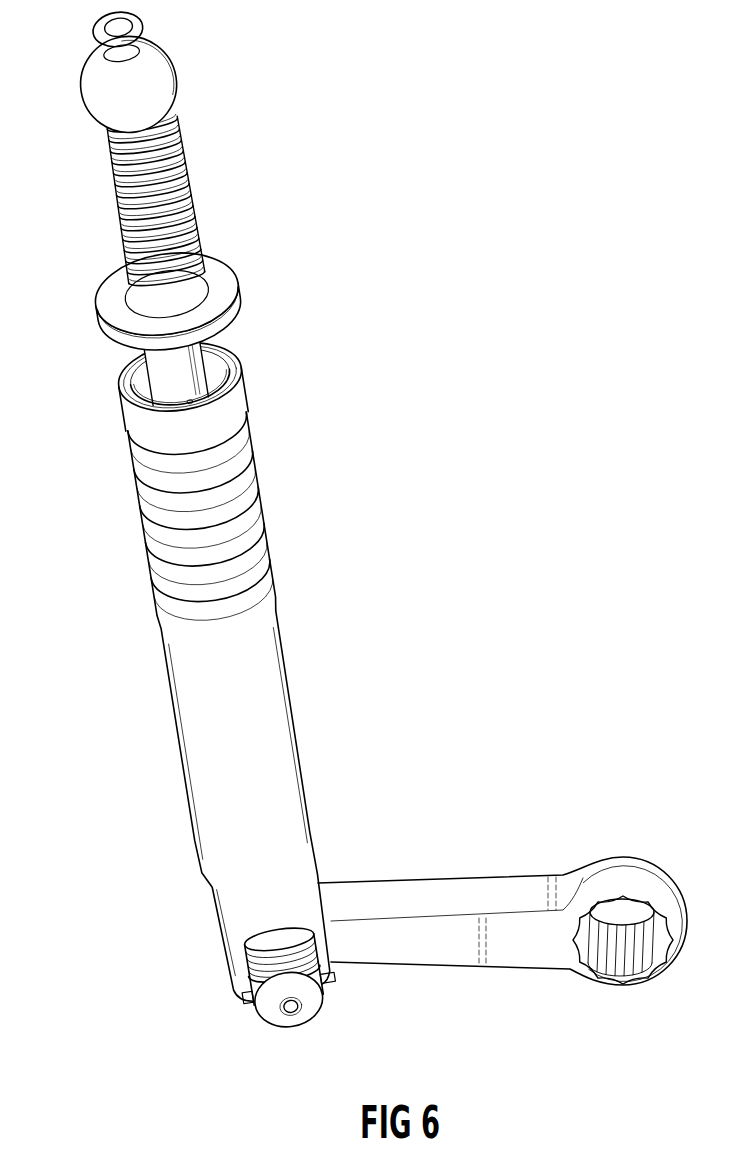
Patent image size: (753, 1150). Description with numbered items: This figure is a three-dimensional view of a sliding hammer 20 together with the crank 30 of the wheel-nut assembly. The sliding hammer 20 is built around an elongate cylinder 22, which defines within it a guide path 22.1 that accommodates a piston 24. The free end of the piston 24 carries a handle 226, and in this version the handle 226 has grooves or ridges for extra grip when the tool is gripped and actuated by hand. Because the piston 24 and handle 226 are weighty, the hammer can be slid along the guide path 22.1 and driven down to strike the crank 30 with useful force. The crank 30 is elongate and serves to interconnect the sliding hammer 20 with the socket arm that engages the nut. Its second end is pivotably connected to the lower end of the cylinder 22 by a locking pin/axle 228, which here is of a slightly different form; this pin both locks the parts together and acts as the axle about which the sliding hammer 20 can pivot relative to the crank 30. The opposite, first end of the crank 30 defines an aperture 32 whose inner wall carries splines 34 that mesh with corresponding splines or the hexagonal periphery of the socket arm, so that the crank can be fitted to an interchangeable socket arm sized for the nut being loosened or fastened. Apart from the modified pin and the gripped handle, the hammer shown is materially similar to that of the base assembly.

The sliding hammer 20 is at (356, 549).
The cylinder 22 is at (215, 745).
The guide path 22.1 is at (146, 388).
The piston 24 is at (190, 358).
The handle 226 is at (153, 193).
The locking pin/axle 228 is at (273, 1010).
The crank 30 is at (440, 897).
The aperture 32 is at (636, 923).
The splines 34 is at (613, 962).